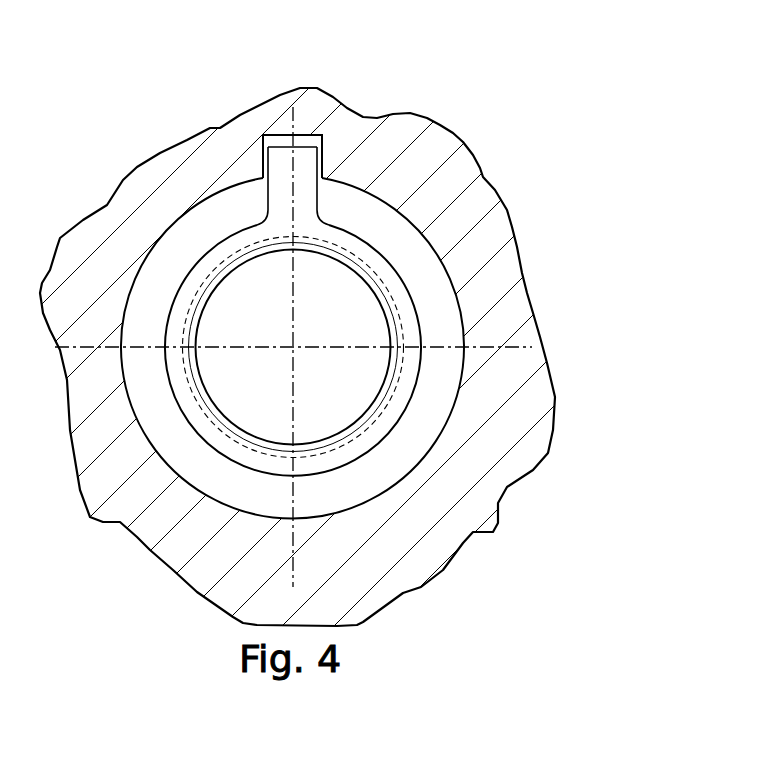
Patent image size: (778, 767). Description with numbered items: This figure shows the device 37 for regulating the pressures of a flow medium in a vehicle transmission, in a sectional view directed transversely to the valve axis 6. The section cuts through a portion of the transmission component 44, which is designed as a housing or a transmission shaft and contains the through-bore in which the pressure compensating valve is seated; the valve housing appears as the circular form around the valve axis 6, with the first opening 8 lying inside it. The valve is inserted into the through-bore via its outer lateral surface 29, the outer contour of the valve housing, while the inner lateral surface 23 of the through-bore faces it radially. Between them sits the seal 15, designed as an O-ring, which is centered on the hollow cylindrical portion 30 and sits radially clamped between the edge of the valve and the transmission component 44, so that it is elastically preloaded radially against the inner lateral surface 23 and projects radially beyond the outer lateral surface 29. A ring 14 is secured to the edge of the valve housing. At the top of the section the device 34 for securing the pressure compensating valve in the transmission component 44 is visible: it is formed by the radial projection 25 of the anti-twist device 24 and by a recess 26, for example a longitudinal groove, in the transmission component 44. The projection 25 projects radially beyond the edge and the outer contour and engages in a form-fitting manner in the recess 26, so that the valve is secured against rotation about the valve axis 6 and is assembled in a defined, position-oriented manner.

The valve axis 6 is at (297, 350).
The first opening 8 is at (365, 380).
The ring 14 is at (212, 267).
The seal 15 is at (379, 348).
The inner lateral surface 23 is at (505, 193).
The anti-twist device 24 is at (280, 118).
The projection 25 is at (311, 124).
The recess 26 is at (275, 145).
The outer lateral surface 29 is at (456, 278).
The hollow cylindrical portion 30 is at (402, 320).
The device for securing the pressure compensating valve 34 is at (294, 135).
The device 37 is at (389, 326).
The transmission component 44 is at (428, 160).